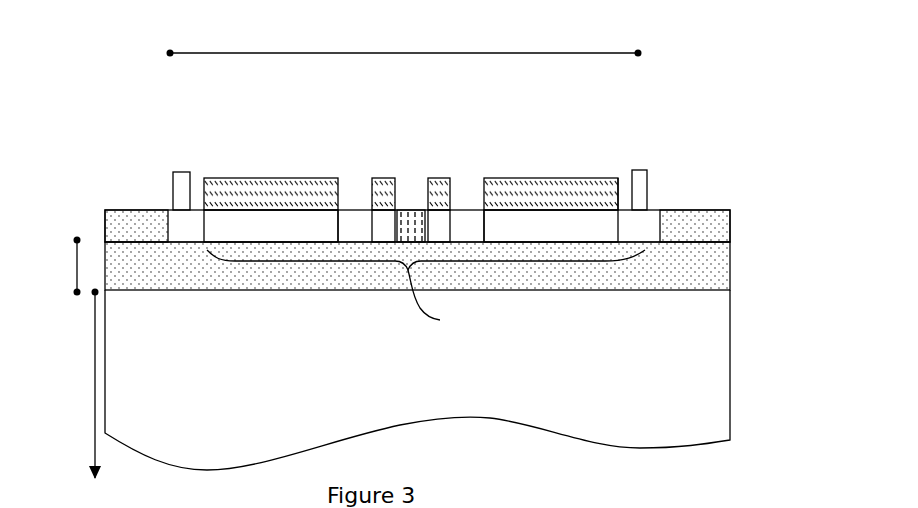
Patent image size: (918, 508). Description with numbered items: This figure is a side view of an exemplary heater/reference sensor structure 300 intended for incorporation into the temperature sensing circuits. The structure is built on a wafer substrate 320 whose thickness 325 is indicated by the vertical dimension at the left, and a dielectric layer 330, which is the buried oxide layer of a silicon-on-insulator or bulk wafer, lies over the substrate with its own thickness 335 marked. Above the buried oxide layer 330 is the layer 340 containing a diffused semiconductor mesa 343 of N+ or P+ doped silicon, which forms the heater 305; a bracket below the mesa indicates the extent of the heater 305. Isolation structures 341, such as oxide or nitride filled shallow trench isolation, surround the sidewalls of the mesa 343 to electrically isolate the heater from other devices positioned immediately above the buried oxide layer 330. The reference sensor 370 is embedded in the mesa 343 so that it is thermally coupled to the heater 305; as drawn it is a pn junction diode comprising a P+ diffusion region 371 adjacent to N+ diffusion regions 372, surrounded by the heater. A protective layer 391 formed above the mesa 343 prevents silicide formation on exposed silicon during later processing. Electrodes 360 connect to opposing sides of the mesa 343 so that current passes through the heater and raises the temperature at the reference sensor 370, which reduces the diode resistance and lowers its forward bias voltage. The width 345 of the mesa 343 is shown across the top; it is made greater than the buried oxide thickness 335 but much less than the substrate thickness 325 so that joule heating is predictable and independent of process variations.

The heater/reference sensor structure 300 is at (76, 60).
The heater 305 is at (426, 292).
The wafer substrate 320 is at (422, 372).
The thickness of the substrate 325 is at (94, 395).
The dielectric layer 330 is at (730, 266).
The thickness of the buried oxide layer 335 is at (76, 262).
The device layer 340 is at (95, 221).
The isolation structures 341 is at (140, 210).
The diffused semiconductor mesa 343 is at (278, 220).
The width of the diffused silicon mesa 345 is at (508, 53).
The electrodes 360 is at (647, 192).
The reference sensor 370 is at (415, 158).
The P+ diffusion region 371 is at (403, 210).
The N+ diffusion regions 372 is at (357, 210).
The protective layer 391 is at (602, 178).